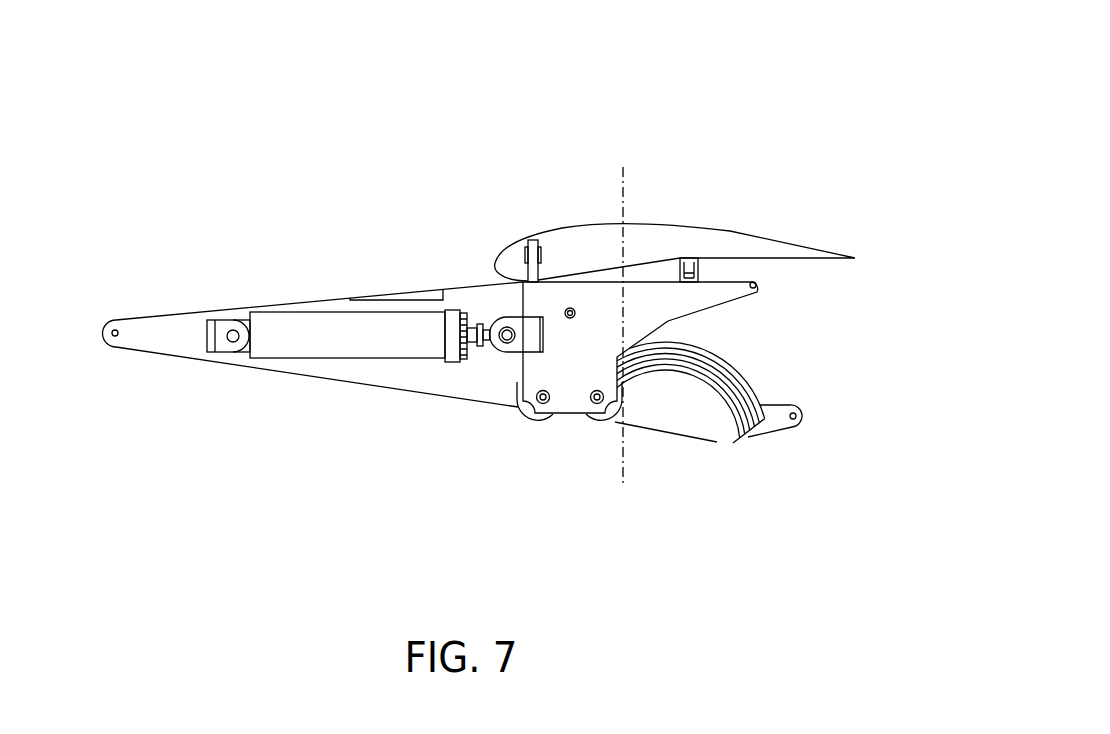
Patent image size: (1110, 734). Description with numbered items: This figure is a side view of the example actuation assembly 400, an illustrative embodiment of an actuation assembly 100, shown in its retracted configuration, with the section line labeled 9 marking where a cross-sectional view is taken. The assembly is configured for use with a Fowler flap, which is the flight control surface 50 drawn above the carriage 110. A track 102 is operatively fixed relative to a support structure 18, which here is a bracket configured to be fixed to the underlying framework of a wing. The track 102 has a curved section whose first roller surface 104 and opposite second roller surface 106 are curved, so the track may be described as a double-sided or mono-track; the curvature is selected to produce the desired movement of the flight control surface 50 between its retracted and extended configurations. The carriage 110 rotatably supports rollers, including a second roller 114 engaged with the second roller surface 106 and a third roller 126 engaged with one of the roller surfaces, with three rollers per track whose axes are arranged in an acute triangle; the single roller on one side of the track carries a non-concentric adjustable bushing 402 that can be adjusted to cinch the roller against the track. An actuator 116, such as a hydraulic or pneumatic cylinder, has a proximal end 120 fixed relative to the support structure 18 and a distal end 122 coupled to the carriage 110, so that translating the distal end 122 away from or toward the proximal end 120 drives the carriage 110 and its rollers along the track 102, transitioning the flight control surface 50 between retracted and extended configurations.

The actuation assembly 100 is at (813, 44).
The actuation assembly 400 is at (785, 97).
The flight control surface 50 is at (688, 228).
The support structure 18 is at (157, 316).
The proximal end 120 is at (249, 311).
The actuator 116 is at (343, 303).
The distal end 122 is at (489, 322).
The non-concentric adjustable bushing 402 is at (578, 312).
The carriage 110 is at (730, 300).
The track 102 is at (722, 358).
The first roller surface 104 is at (745, 383).
The second roller surface 106 is at (716, 441).
The second roller 114 is at (527, 414).
The third roller 126 is at (592, 421).
The section line 9- 9 is at (623, 167).